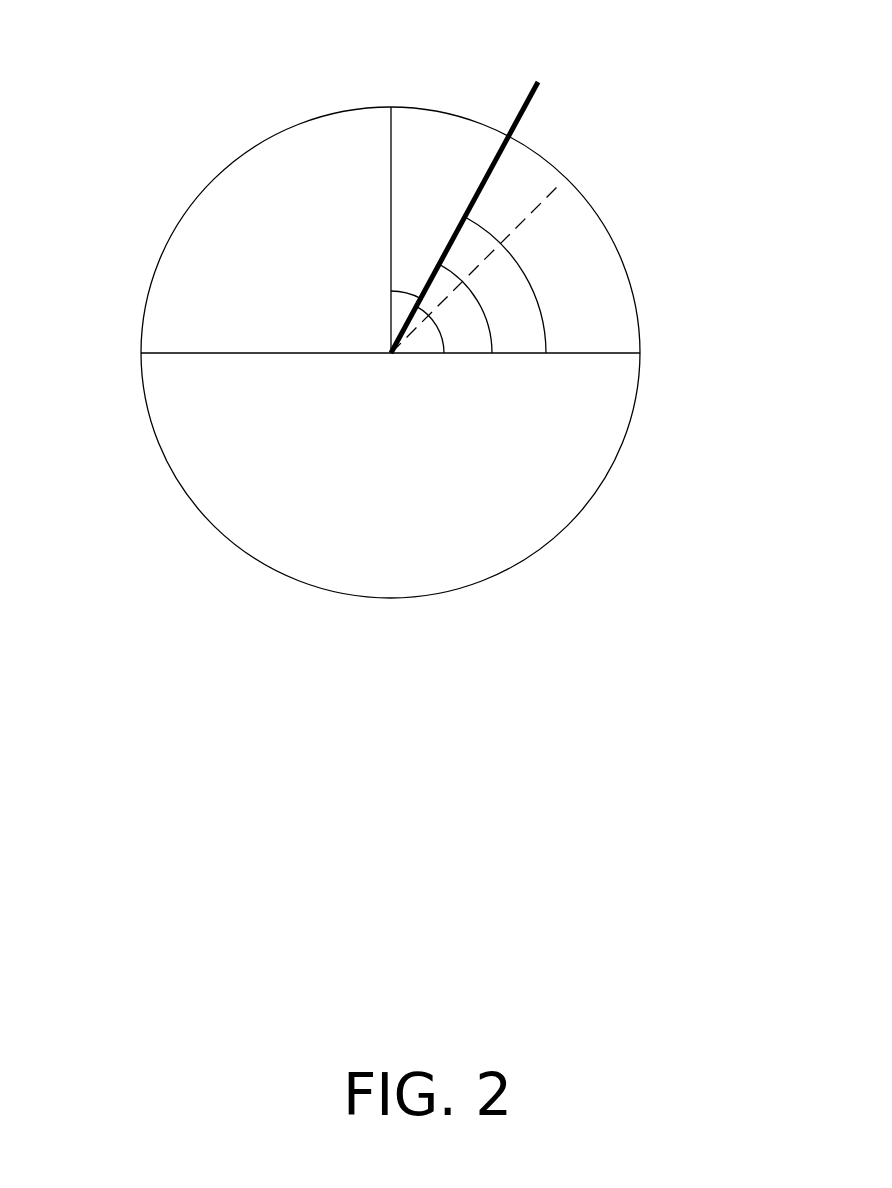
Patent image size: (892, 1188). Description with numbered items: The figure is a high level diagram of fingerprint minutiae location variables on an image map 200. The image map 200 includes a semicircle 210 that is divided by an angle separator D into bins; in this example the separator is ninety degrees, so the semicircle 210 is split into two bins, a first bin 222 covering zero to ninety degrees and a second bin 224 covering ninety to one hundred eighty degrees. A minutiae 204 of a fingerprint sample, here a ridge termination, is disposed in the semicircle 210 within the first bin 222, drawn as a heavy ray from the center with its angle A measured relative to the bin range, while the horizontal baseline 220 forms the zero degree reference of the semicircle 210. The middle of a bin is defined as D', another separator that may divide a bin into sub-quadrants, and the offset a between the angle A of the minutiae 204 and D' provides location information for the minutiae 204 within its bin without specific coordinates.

The image map 200 is at (223, 121).
The minutiae 204 is at (538, 78).
The semicircle 210 is at (175, 228).
The horizontal reference line 220 is at (327, 356).
The bin 222 is at (598, 264).
The bin 224 is at (297, 254).